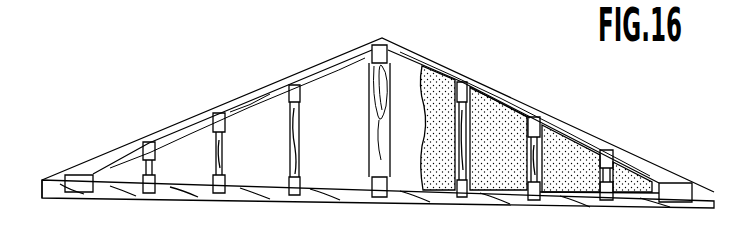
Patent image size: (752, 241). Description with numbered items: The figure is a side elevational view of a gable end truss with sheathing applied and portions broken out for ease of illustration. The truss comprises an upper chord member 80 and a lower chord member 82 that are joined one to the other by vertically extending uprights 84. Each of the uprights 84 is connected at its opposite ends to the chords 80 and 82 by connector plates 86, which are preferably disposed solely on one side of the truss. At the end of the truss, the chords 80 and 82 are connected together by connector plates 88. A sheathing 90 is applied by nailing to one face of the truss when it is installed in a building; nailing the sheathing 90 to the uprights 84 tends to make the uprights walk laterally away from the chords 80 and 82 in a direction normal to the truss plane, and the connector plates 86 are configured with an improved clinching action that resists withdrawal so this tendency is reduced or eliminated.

The upper chord member 80 is at (255, 92).
The lower chord member 82 is at (248, 197).
The uprights 84 is at (301, 118).
The connector plates 86 is at (301, 84).
The connector plates 88 is at (80, 188).
The sheathing 90 is at (497, 122).